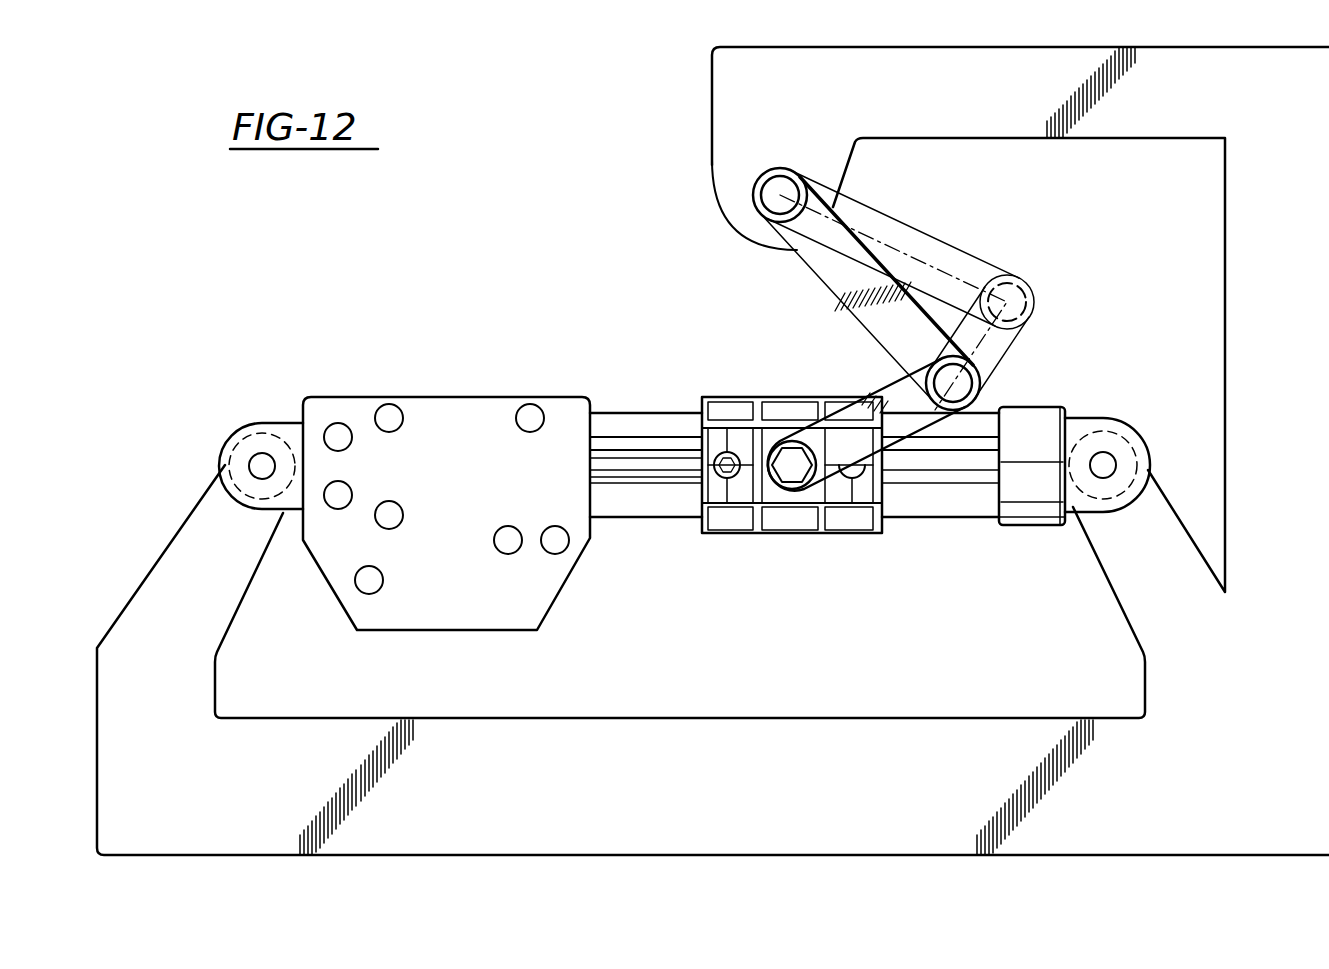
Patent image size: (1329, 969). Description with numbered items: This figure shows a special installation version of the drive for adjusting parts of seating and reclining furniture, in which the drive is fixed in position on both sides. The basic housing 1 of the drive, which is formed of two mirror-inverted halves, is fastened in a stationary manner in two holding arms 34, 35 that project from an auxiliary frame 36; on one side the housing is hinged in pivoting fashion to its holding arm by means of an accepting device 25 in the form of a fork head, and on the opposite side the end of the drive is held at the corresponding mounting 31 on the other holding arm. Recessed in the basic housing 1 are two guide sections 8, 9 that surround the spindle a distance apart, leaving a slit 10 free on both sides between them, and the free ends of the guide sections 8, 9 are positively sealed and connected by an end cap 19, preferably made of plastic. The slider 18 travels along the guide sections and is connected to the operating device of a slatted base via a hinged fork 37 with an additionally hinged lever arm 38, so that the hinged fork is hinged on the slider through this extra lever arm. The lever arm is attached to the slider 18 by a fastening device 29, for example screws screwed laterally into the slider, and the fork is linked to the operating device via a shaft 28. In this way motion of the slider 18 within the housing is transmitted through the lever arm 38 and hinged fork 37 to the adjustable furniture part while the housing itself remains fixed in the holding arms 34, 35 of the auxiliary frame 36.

The basic housing 1 is at (483, 603).
The guide section 8 is at (660, 418).
The guide section 9 is at (627, 503).
The slit 10 is at (625, 440).
The slider 18 is at (727, 525).
The end cap 19 is at (1015, 515).
The accepting device 25 is at (280, 428).
The shaft 28 is at (752, 194).
The fastening device 29 is at (793, 480).
The right pivot clevis 31 is at (1082, 422).
The holding arm 34 is at (178, 550).
The holding arm 35 is at (1110, 542).
The auxiliary frame 36 is at (1260, 202).
The hinged fork 37 is at (865, 278).
The lever arm 38 is at (815, 430).